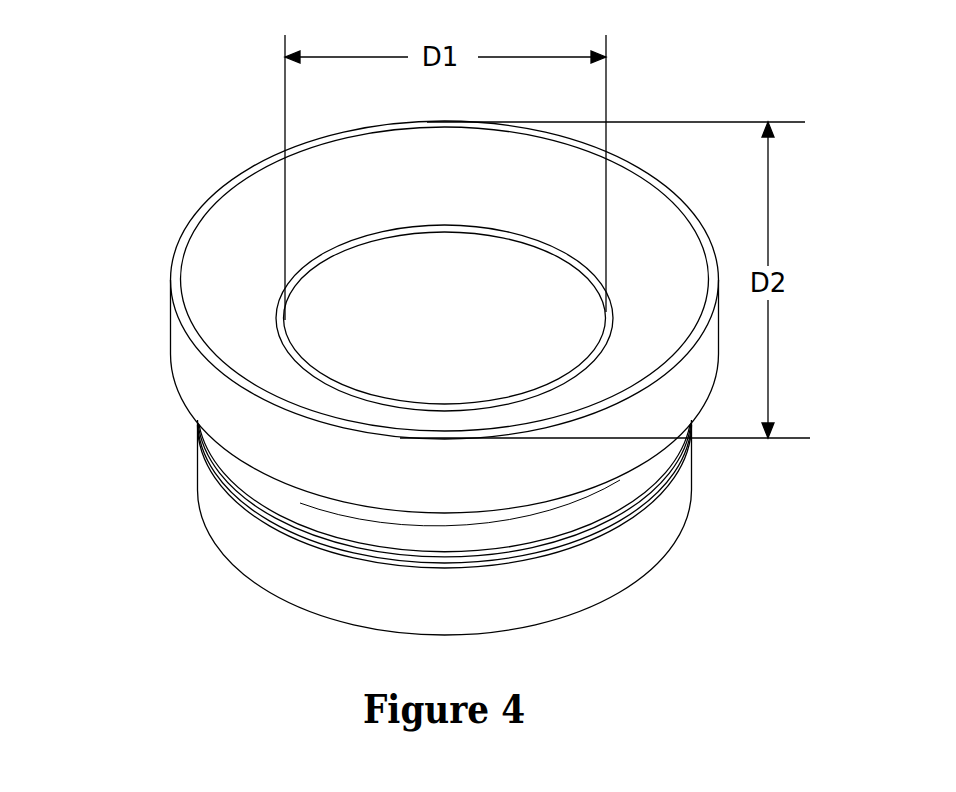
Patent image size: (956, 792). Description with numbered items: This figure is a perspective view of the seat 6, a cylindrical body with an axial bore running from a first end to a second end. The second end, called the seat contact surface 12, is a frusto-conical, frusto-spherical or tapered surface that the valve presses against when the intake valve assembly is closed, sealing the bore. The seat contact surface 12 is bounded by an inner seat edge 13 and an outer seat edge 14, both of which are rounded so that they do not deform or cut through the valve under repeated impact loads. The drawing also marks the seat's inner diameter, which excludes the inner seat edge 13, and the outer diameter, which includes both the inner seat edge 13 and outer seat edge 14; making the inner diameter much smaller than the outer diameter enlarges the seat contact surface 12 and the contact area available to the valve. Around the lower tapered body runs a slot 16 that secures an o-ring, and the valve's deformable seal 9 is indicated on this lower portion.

The seat 6 is at (702, 87).
The deformable seal 9 is at (658, 530).
The seat contact surface 12 is at (227, 288).
The inner seat edge 13 is at (290, 287).
The outer seat edge 14 is at (190, 338).
The slot 16 is at (242, 502).